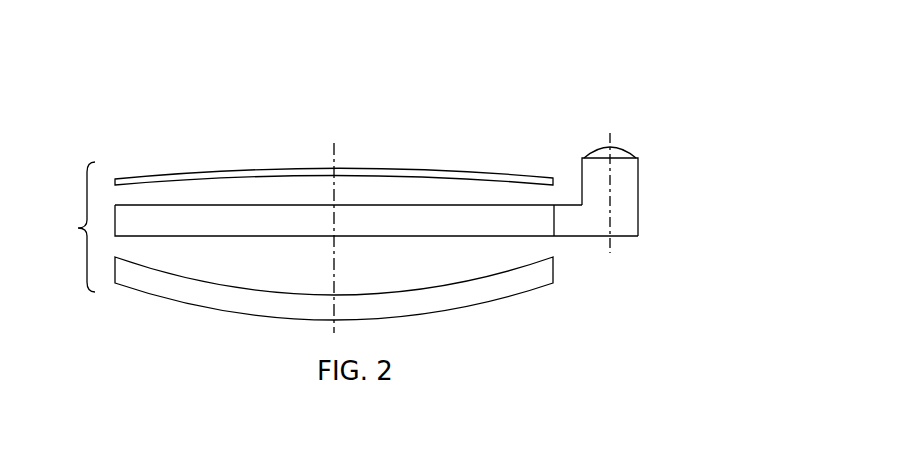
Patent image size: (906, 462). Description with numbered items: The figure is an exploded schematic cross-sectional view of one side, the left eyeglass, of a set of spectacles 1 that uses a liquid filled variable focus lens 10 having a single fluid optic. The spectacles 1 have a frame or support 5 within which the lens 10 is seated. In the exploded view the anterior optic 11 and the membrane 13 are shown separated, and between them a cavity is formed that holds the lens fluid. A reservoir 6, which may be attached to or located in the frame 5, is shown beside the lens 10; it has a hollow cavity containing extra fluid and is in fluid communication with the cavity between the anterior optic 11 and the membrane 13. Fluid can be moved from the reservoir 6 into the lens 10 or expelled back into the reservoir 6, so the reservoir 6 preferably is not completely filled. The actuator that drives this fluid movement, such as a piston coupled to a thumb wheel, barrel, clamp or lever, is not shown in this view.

The spectacles 1 is at (207, 140).
The frame 5 is at (523, 225).
The reservoir 6 is at (638, 180).
The lens 10 is at (63, 227).
The anterior optic 11 is at (530, 272).
The membrane 13 is at (513, 175).